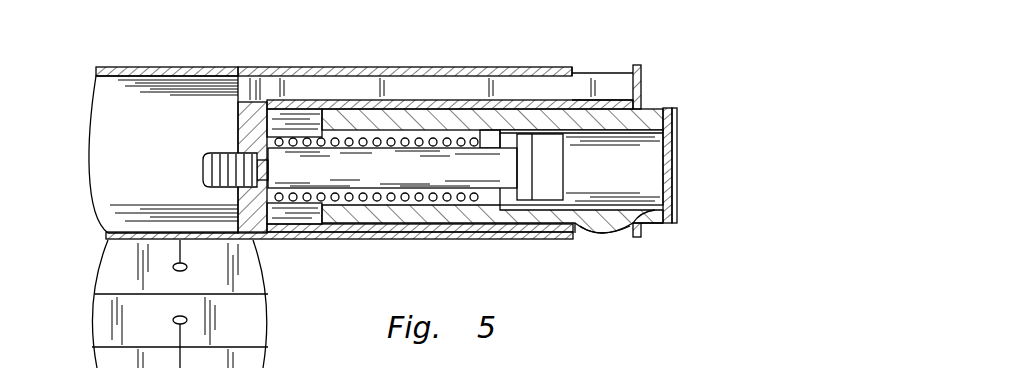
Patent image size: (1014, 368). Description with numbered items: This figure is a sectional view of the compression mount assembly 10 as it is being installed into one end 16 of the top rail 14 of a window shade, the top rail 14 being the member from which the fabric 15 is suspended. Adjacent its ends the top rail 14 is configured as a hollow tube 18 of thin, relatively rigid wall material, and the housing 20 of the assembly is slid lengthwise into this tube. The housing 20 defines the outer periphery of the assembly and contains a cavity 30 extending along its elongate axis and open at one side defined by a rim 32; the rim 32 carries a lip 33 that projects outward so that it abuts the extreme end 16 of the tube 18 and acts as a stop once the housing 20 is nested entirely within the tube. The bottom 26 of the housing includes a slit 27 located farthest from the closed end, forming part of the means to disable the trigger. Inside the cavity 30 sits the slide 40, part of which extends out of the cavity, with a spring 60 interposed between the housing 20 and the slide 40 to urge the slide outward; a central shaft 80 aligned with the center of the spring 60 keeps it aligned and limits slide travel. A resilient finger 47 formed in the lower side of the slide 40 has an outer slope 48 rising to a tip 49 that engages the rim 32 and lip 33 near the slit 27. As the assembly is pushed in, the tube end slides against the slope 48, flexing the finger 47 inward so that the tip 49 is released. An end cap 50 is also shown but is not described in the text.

The compression mount assembly 10 is at (648, 51).
The top rail 14 is at (153, 155).
The fabric 15 is at (90, 318).
The end 16 is at (467, 67).
The hollow tube 18 is at (148, 67).
The housing 20 is at (298, 100).
The bottom 26 is at (437, 233).
The slit 27 is at (517, 232).
The cavity 30 is at (292, 206).
The rim 32 is at (641, 75).
The lip 33 is at (633, 66).
The slide 40 is at (655, 109).
The finger 47 is at (613, 234).
The slope 48 is at (578, 235).
The tip 49 is at (652, 219).
The end cap 50 is at (677, 120).
The spring 60 is at (400, 138).
The central shaft 80 is at (375, 173).